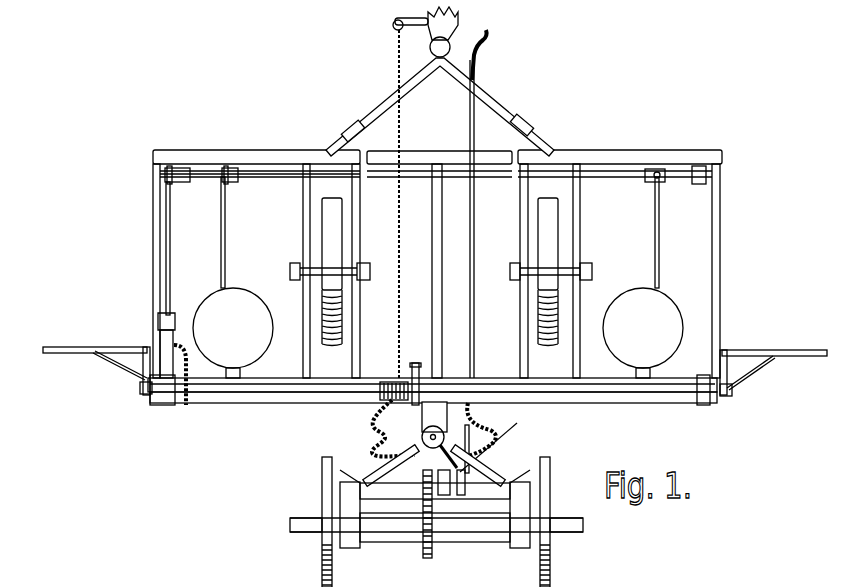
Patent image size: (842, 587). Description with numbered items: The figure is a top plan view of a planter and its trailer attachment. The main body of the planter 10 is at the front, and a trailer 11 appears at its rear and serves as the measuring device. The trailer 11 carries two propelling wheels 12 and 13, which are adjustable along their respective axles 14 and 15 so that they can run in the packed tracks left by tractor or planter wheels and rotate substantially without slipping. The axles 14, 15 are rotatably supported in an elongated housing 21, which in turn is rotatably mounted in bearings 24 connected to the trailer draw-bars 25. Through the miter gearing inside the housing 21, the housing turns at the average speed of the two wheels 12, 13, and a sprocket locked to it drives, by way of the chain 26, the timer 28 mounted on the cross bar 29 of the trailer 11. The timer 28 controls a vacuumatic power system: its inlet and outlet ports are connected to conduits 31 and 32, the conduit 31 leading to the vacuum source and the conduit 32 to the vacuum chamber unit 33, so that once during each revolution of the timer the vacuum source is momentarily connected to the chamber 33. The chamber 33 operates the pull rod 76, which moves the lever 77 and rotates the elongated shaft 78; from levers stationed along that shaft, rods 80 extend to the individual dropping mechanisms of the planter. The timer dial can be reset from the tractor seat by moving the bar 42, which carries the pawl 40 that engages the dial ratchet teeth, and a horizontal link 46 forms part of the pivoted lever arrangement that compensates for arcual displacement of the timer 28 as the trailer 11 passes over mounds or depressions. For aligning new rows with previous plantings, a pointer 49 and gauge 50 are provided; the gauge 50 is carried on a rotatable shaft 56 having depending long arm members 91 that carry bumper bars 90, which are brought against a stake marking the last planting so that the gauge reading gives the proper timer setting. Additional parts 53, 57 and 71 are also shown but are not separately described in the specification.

The main body of the planter 10 is at (609, 143).
The trailer device 11 is at (455, 548).
The propelling wheel 12 is at (550, 490).
The propelling wheel 13 is at (322, 463).
The axle 14 is at (583, 525).
The axle 15 is at (290, 525).
The elongated housing 21 is at (403, 542).
The bearings 24 is at (355, 548).
The trailer draw-bars 25 is at (372, 470).
The chain 26 is at (423, 498).
The timer 28 is at (462, 490).
The cross bar 29 is at (392, 483).
The conduit 31 is at (475, 305).
The conduit 32 is at (312, 405).
The vacuum chamber unit 33 is at (158, 338).
The pawl 40 is at (498, 444).
The bar 42 is at (482, 420).
The horizontal link 46 is at (422, 437).
The pointer 49 is at (396, 382).
The gauge 50 is at (416, 363).
The left hose 53 is at (375, 407).
The rotatable shaft 56 is at (622, 403).
The chain 57 is at (401, 275).
The clamp 71 is at (230, 184).
The pull rod 76 is at (170, 212).
The lever 77 is at (176, 184).
The elongated shaft 78 is at (258, 178).
The rod 80 is at (224, 240).
The bumper bar 90 is at (80, 347).
The long arm member 91 is at (140, 389).